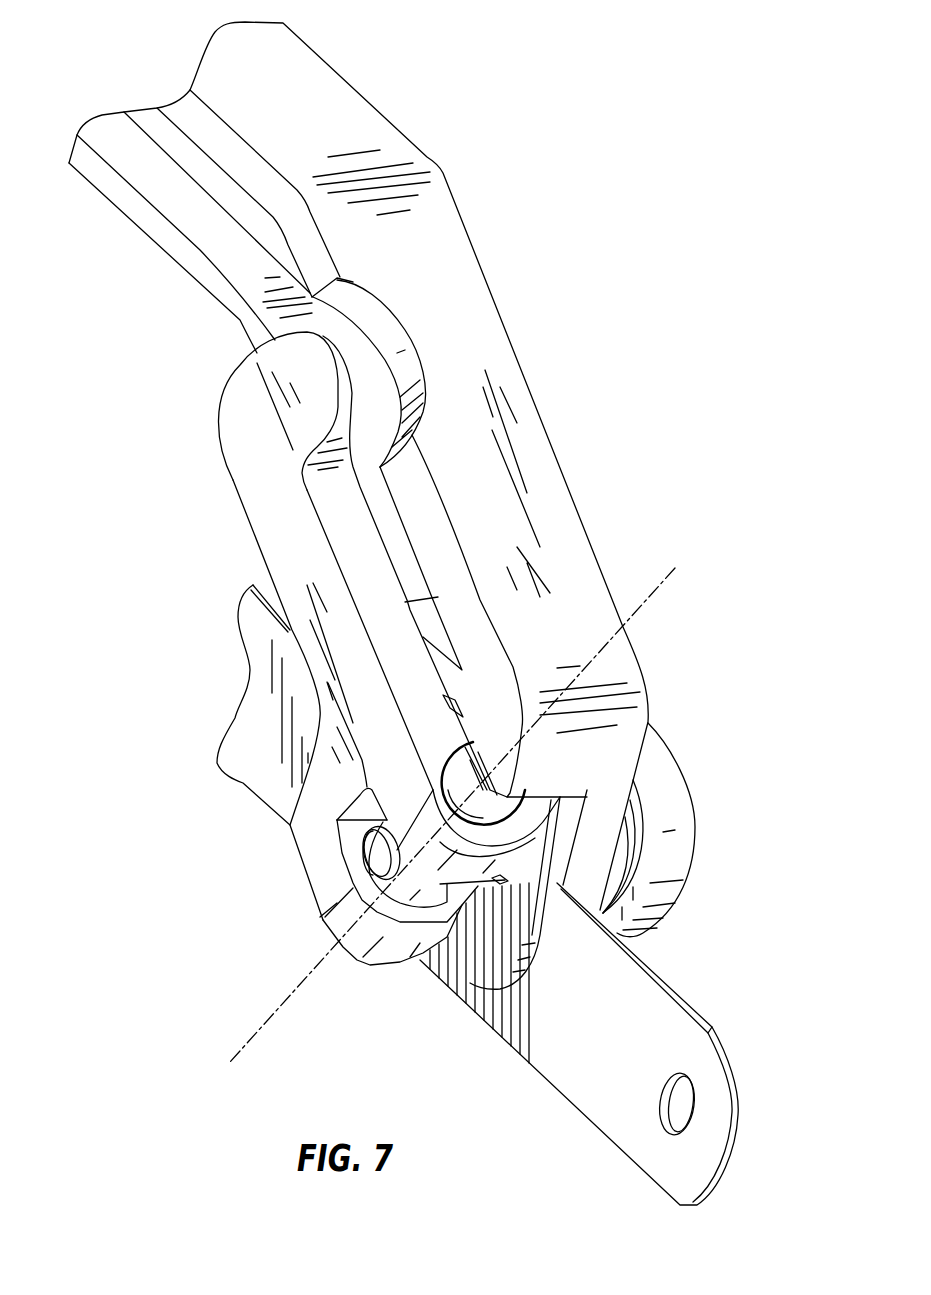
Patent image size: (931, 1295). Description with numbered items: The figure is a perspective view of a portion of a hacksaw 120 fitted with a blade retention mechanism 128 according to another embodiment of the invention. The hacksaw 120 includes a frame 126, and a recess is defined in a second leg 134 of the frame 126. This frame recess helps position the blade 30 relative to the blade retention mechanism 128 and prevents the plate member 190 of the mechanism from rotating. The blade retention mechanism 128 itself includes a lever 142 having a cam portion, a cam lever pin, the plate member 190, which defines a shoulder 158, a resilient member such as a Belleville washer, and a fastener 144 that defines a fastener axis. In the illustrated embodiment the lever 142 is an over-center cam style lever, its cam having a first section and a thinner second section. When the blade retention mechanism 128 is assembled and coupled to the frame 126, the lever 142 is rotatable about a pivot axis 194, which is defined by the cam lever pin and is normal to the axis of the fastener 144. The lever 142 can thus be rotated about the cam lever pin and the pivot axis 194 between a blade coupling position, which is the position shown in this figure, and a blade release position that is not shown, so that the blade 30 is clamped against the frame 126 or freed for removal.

The hacksaw 120 is at (377, 62).
The frame 126 is at (495, 230).
The second leg 134 is at (533, 470).
The lever 142 is at (260, 470).
The fastener 144 is at (668, 787).
The blade retention mechanism 128 is at (227, 867).
The shoulder 158 is at (563, 895).
The plate member 190 is at (473, 963).
The pivot axis 194 is at (272, 1013).
The blade 30 is at (698, 990).